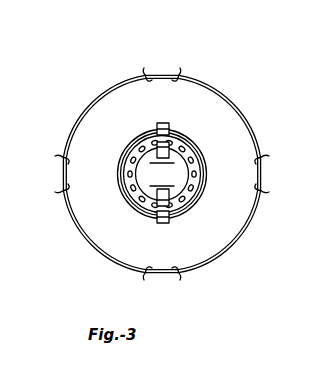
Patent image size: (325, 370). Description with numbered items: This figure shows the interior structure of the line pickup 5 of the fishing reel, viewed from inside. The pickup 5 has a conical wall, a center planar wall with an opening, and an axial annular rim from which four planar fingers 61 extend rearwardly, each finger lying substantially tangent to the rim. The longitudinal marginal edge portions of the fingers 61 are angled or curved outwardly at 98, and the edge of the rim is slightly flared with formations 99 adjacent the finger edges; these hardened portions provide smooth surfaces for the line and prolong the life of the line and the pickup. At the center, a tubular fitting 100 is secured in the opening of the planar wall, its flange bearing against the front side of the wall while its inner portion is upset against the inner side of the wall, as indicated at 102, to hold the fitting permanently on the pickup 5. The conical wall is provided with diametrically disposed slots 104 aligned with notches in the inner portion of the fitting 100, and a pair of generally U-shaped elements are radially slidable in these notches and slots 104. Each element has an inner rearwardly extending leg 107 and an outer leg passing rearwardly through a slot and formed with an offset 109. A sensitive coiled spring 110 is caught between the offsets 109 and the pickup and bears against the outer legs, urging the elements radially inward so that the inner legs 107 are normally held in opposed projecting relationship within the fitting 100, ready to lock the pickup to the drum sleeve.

The pickup 5 is at (268, 117).
The fingers 61 is at (163, 75).
The angled or curved edge portions of the fingers 98 is at (144, 68).
The flared formations of the rim 99 is at (148, 82).
The tubular fitting 100 is at (184, 162).
The upset inner portion of the fitting 102 is at (183, 195).
The slots 104 is at (163, 123).
The inner leg 107 is at (168, 185).
The offset 109 is at (170, 226).
The coiled spring 110 is at (134, 205).